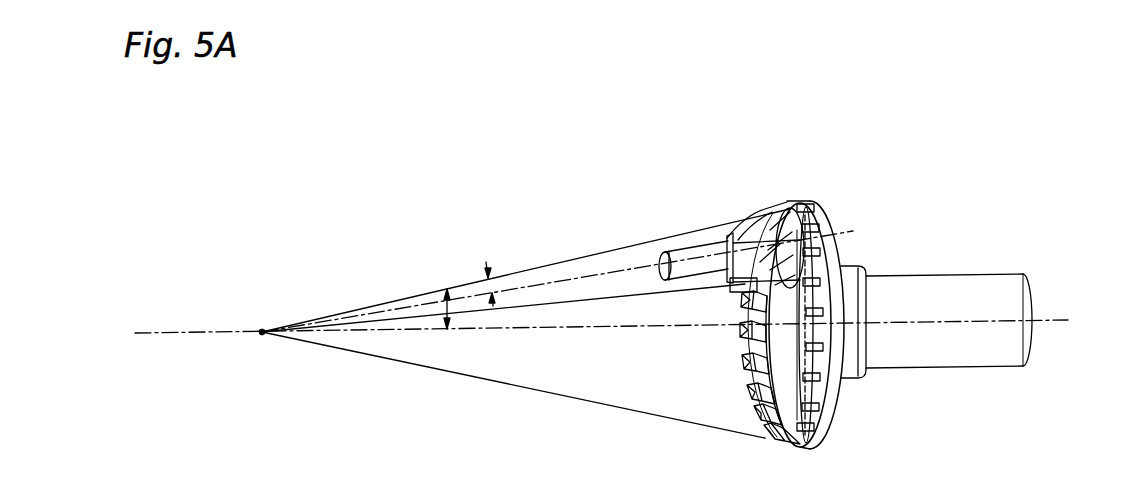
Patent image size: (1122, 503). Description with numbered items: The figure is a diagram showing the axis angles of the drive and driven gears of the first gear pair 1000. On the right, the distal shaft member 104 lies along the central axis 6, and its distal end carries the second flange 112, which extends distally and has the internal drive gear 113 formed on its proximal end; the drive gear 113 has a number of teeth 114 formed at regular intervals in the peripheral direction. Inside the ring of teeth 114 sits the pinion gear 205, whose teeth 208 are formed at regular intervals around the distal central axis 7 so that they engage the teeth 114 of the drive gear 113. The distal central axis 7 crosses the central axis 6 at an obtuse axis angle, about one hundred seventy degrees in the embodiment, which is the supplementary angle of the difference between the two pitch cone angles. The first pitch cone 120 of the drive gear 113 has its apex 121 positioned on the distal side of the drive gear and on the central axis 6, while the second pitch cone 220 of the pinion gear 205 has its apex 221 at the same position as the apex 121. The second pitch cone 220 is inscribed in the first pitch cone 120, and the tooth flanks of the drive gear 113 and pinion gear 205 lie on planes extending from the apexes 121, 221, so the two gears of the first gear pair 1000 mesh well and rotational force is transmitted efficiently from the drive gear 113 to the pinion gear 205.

The first gear pair 1000 is at (776, 166).
The pinion gear 205 is at (770, 207).
The teeth 208 is at (733, 220).
The second flange 112 is at (813, 203).
The distal central axis 7 is at (857, 223).
The distal shaft member 104 is at (980, 273).
The central axis 6 is at (1053, 320).
The drive gear 113 is at (917, 455).
The teeth 114 is at (800, 387).
The second pitch cone 220 is at (533, 306).
The first pitch cone 120 is at (604, 401).
The apex 121 is at (262, 332).
The apex 221 is at (262, 332).